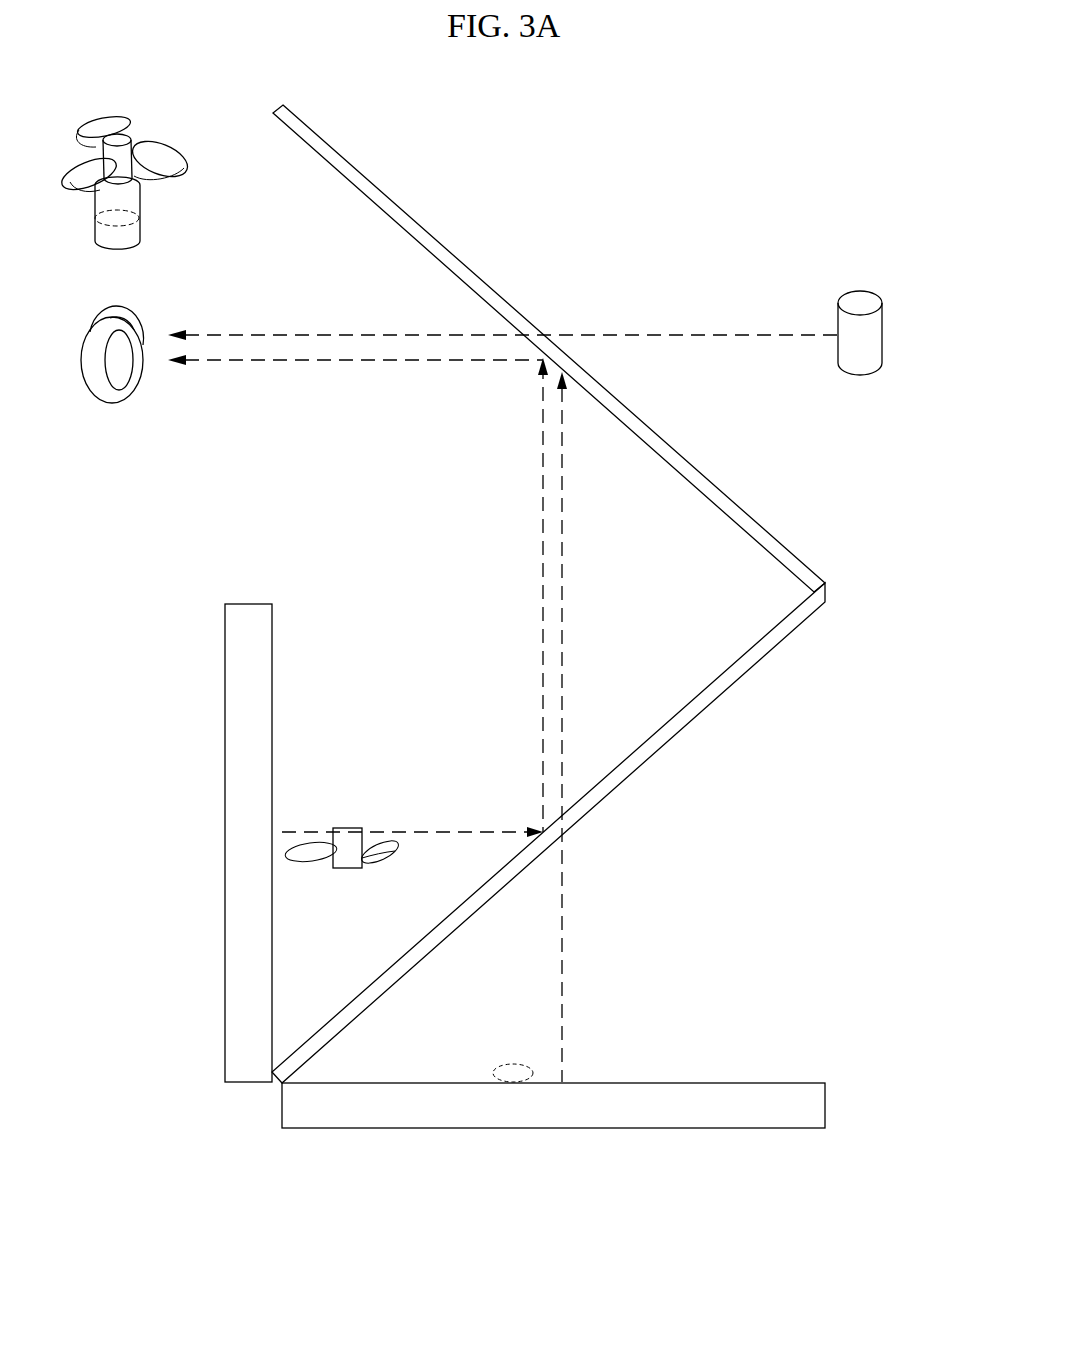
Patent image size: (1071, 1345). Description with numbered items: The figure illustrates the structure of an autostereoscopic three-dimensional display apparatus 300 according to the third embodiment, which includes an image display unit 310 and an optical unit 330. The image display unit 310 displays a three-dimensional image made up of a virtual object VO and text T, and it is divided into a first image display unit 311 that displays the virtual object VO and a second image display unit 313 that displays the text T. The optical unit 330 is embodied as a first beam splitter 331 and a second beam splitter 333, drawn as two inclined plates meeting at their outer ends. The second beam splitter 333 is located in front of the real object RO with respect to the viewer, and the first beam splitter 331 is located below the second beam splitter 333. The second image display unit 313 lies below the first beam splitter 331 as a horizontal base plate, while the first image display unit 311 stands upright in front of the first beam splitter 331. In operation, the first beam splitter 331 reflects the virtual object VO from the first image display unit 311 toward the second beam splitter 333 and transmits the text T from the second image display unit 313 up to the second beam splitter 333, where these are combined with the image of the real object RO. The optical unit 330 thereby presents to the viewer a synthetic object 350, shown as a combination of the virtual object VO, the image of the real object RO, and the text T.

The autostereoscopic 3D display apparatus 300 is at (670, 105).
The synthetic object 350 is at (147, 123).
The real object RO is at (872, 290).
The optical unit 330 is at (646, 585).
The second beam splitter 333 is at (757, 545).
The first beam splitter 331 is at (687, 703).
The image display unit 310 is at (268, 1238).
The first image display unit 311 is at (258, 1084).
The second image display unit 313 is at (348, 1130).
The text T is at (496, 1082).
The 3D virtual object VO is at (330, 872).